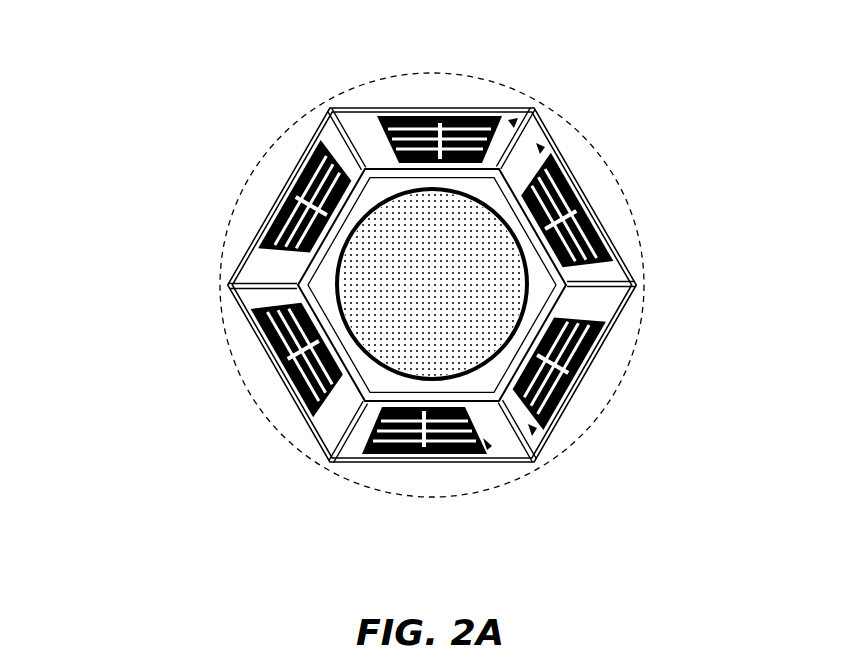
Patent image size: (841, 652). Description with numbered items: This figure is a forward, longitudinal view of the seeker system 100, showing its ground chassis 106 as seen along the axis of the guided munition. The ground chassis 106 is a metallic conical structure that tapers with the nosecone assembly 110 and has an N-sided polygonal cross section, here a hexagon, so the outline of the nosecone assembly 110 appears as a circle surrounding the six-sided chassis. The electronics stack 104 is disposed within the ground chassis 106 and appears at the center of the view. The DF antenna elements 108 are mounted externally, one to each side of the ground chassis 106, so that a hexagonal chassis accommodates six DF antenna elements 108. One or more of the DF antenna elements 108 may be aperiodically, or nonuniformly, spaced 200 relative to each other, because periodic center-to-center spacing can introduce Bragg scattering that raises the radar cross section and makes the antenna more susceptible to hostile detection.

The seeker system 100 is at (139, 38).
The electronics stack 104 is at (424, 262).
The ground chassis 106 is at (314, 132).
The DF antenna elements 108 is at (428, 140).
The nosecone assembly 110 is at (600, 417).
The aperiodic spacing 200 is at (541, 149).